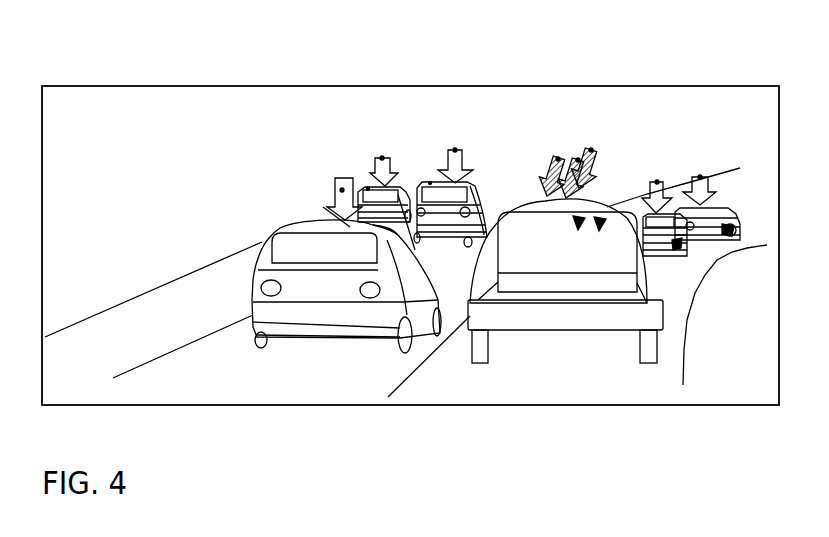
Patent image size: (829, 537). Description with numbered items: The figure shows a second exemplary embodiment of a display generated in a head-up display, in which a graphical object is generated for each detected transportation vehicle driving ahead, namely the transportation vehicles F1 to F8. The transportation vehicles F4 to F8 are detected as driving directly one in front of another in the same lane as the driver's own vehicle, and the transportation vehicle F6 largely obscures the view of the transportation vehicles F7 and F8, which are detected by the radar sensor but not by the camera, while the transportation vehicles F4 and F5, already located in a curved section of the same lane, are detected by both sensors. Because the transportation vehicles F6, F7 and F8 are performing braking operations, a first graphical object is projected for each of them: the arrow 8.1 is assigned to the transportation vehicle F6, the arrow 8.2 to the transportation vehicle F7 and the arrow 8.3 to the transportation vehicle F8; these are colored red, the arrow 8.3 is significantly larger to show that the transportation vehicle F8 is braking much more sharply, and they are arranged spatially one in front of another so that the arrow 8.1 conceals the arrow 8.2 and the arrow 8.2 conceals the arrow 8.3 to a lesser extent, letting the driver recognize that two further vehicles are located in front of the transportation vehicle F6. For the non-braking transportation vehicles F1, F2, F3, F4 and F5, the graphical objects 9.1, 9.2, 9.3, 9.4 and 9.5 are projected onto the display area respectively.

The transportation vehicle driving ahead F1 is at (340, 262).
The transportation vehicle driving ahead F2 is at (368, 189).
The transportation vehicle driving ahead F3 is at (430, 183).
The transportation vehicle driving ahead F4 is at (678, 238).
The transportation vehicle driving ahead F5 is at (720, 233).
The transportation vehicle driving ahead F6 is at (580, 263).
The transportation vehicle driving ahead F7 is at (584, 206).
The transportation vehicle driving ahead F8 is at (609, 207).
The first graphical object 8.1 is at (558, 159).
The first graphical object 8.2 is at (578, 160).
The first graphical object 8.3 is at (591, 150).
The graphical object 9.1 is at (342, 190).
The graphical object 9.2 is at (382, 158).
The graphical object 9.3 is at (455, 150).
The graphical object 9.4 is at (657, 182).
The graphical object 9.5 is at (700, 177).